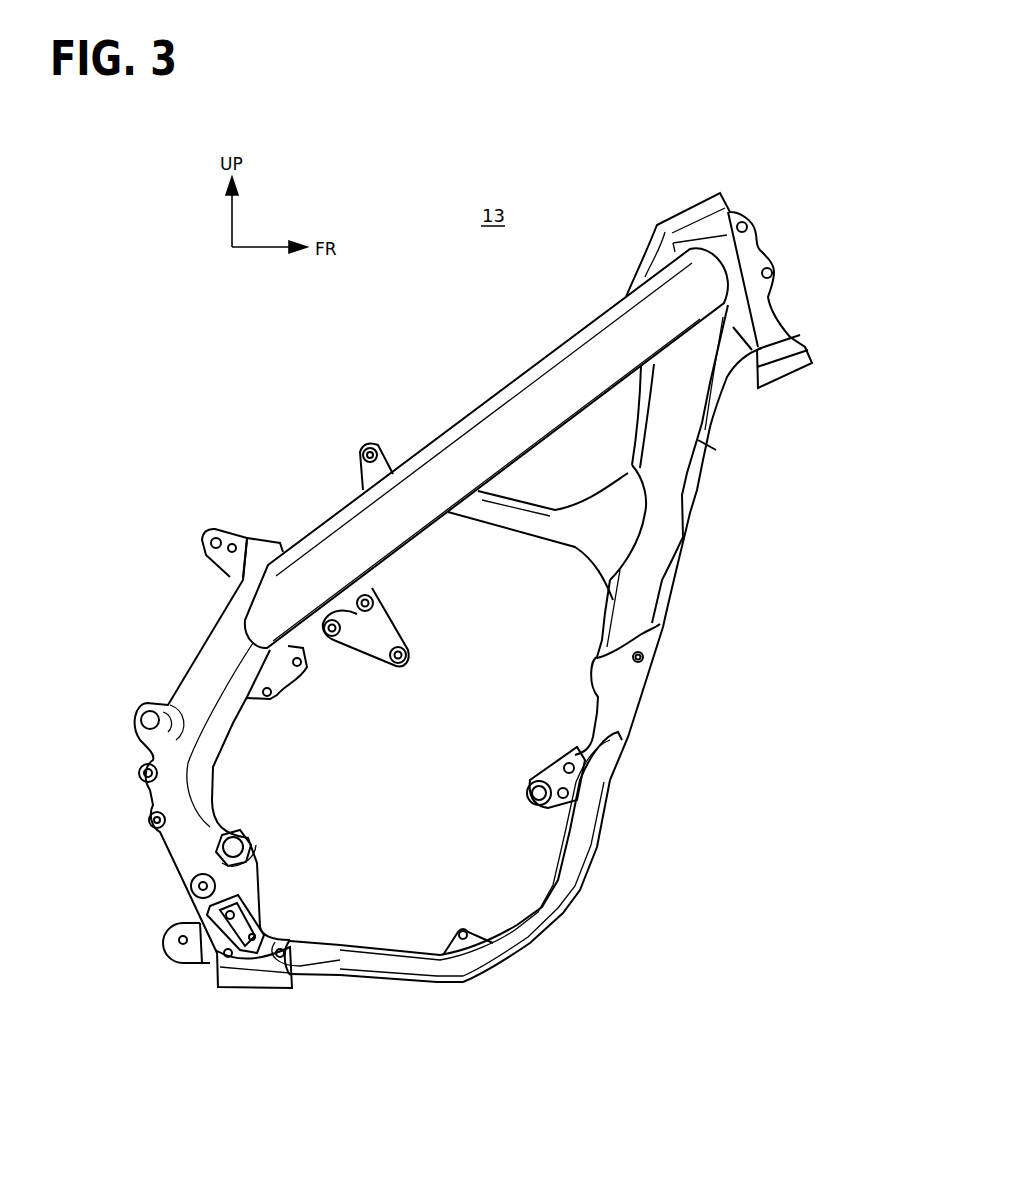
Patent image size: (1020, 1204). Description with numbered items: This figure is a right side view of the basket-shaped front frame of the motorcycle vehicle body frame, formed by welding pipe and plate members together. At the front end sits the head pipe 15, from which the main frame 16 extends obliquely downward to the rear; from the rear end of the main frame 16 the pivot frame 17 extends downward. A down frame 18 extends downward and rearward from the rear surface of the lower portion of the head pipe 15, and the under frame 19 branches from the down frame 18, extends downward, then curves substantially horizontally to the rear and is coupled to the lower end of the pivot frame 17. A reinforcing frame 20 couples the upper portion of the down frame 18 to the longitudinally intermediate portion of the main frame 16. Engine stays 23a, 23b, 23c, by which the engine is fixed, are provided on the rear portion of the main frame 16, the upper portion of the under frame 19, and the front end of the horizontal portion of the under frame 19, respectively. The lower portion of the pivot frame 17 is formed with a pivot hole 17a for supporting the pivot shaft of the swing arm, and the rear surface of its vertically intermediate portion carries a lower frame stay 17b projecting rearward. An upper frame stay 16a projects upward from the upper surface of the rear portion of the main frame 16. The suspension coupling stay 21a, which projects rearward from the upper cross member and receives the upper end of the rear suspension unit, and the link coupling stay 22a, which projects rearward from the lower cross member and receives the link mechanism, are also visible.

The head pipe 15 is at (697, 212).
The main frame 16 is at (505, 405).
The upper frame stay 16a is at (370, 445).
The pivot frame 17 is at (203, 665).
The pivot hole 17a is at (235, 847).
The lower frame stay 17b is at (147, 708).
The down frame 18 is at (668, 565).
The under frame 19 is at (575, 908).
The reinforcing frame 20 is at (513, 535).
The suspension coupling stay 21a is at (210, 532).
The link coupling stay 22a is at (165, 937).
The engine stay 23a is at (385, 665).
The engine stay 23b is at (548, 778).
The engine stay 23c is at (463, 928).